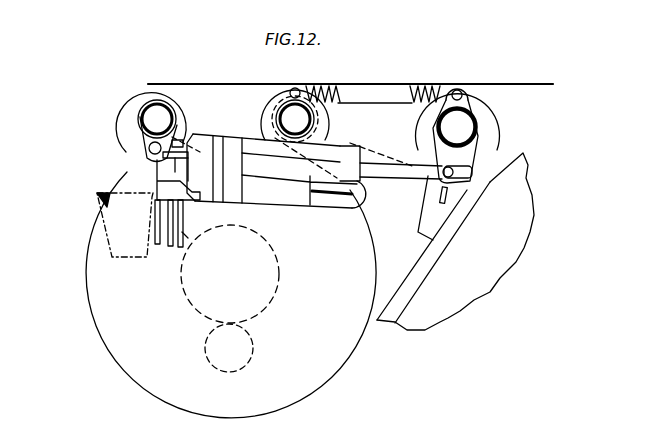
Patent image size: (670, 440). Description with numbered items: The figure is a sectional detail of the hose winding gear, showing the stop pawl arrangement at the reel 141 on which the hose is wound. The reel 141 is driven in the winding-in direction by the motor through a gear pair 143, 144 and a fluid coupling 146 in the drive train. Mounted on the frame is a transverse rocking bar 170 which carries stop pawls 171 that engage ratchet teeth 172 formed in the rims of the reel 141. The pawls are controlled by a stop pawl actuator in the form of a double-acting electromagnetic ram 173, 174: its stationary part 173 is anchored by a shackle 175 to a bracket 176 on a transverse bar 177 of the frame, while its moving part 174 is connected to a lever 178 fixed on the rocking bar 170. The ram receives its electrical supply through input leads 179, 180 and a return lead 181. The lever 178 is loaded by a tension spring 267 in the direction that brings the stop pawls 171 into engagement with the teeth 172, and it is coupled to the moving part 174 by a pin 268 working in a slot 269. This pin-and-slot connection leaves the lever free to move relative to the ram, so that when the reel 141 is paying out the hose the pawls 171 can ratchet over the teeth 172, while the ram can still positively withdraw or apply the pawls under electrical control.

The reel 141 is at (510, 207).
The gear pair 143 is at (253, 348).
The gear pair 144 is at (282, 258).
The fluid coupling 146 is at (342, 363).
The transverse rocking bar 170 is at (468, 112).
The stop pawls 171 is at (430, 203).
The ratchet teeth 172 is at (435, 246).
The stationary part of electromagnetic ram 173 is at (301, 185).
The moving part of electromagnetic ram 174 is at (390, 168).
The shackle 175 is at (170, 153).
The bracket 176 is at (150, 146).
The transverse bar 177 is at (142, 105).
The lever 178 is at (446, 157).
The input lead 179 is at (182, 232).
The input lead 180 is at (162, 245).
The return lead 181 is at (107, 228).
The tension spring 267 is at (325, 102).
The pin 268 is at (478, 165).
The slot 269 is at (488, 180).